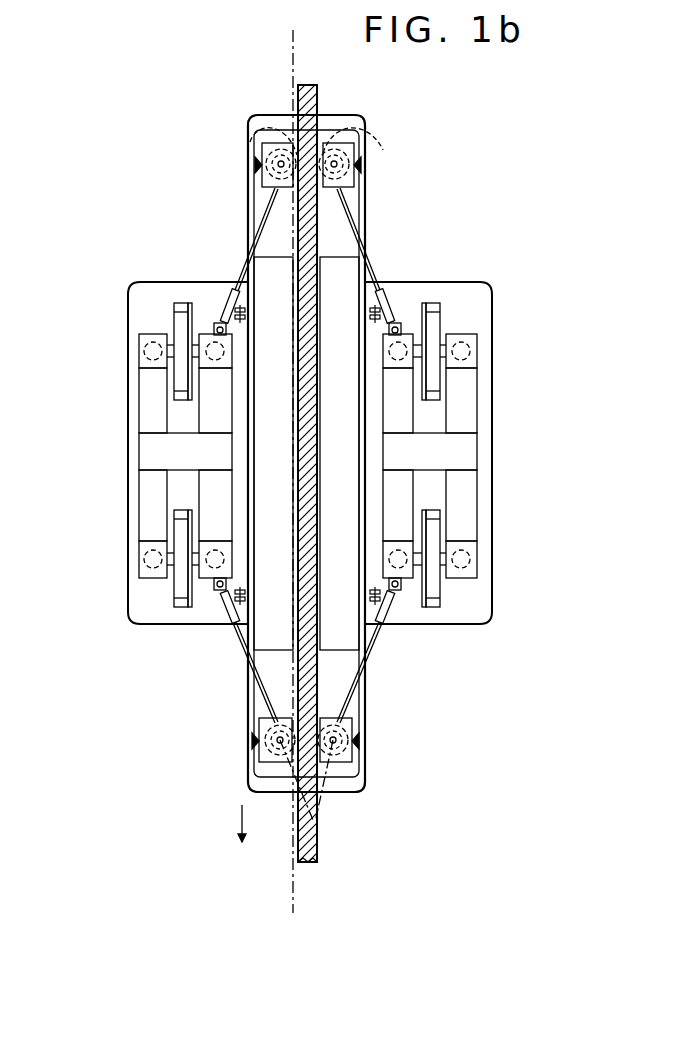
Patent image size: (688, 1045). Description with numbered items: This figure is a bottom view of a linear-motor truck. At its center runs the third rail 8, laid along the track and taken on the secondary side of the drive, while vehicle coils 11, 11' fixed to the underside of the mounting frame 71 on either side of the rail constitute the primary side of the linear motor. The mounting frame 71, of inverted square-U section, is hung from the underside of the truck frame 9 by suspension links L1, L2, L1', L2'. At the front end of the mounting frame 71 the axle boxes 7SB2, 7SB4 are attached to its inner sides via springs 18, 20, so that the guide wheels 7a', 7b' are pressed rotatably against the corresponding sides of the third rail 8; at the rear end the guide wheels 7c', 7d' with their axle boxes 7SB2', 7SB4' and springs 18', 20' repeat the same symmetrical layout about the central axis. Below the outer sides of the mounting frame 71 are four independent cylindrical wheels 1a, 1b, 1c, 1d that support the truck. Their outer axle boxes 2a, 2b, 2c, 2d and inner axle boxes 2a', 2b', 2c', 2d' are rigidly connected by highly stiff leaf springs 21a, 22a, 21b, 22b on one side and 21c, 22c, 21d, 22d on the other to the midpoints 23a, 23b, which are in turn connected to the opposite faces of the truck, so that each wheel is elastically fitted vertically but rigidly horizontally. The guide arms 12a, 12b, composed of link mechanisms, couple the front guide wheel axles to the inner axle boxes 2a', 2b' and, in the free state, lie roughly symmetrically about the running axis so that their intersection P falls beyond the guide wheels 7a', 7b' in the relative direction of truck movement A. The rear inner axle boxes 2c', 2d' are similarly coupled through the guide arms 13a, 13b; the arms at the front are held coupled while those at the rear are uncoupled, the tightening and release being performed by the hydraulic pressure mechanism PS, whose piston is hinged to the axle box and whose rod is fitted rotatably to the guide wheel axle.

The third rail 8 is at (315, 847).
The intersection of the guide arms P is at (313, 817).
The truck frame 9 is at (142, 285).
The mounting frame 71 is at (247, 715).
The vehicle coil 11' is at (277, 473).
The vehicle coil 11 is at (339, 473).
The independent wheel 1d is at (175, 313).
The independent wheel 1c is at (440, 283).
The independent wheel 1b is at (205, 590).
The independent wheel 1a is at (433, 603).
The axle box 2d is at (134, 351).
The inner axle box 2d' is at (120, 337).
The axle box 2c is at (473, 351).
The inner axle box 2c' is at (475, 346).
The axle box 2b is at (124, 558).
The inner axle box 2b' is at (134, 556).
The axle box 2a is at (474, 570).
The inner axle box 2a' is at (476, 558).
The leaf spring 21a is at (463, 392).
The leaf spring 21b is at (398, 420).
The leaf spring 21c is at (212, 385).
The leaf spring 21d is at (150, 398).
The leaf spring 22a is at (462, 512).
The leaf spring 22b is at (398, 490).
The leaf spring 22c is at (212, 490).
The leaf spring 22d is at (150, 497).
The midpoint 23a is at (463, 446).
The midpoint 23b is at (150, 447).
The axle box 7SB4' is at (238, 136).
The axle box 7SB2' is at (367, 136).
The axle box 7SB4 is at (234, 761).
The axle box 7SB2 is at (379, 766).
The guide wheel 7d' is at (253, 155).
The guide wheel 7c' is at (365, 155).
The guide wheel 7b' is at (243, 750).
The guide wheel 7a' is at (367, 732).
The spring 20' is at (211, 178).
The spring 18' is at (402, 160).
The spring 20 is at (224, 734).
The spring 18 is at (396, 746).
The guide arm 13a is at (353, 200).
The guide arm 13b is at (267, 197).
The guide arm 12a is at (353, 697).
The guide arm 12b is at (262, 697).
The suspension link L1' is at (220, 284).
The suspension link L2' is at (397, 286).
The suspension link L1 is at (225, 622).
The suspension link L2 is at (390, 633).
The hydraulic pressure mechanism PS is at (222, 322).
The relative direction of truck movement A is at (242, 823).